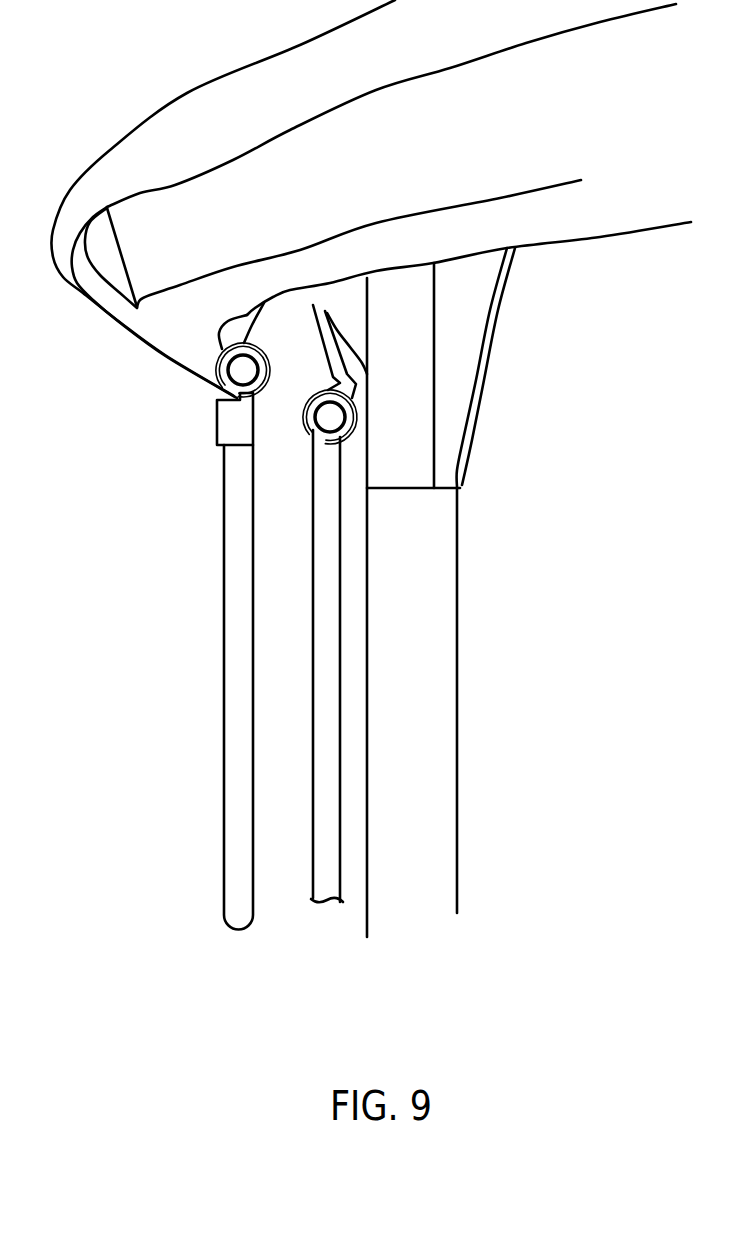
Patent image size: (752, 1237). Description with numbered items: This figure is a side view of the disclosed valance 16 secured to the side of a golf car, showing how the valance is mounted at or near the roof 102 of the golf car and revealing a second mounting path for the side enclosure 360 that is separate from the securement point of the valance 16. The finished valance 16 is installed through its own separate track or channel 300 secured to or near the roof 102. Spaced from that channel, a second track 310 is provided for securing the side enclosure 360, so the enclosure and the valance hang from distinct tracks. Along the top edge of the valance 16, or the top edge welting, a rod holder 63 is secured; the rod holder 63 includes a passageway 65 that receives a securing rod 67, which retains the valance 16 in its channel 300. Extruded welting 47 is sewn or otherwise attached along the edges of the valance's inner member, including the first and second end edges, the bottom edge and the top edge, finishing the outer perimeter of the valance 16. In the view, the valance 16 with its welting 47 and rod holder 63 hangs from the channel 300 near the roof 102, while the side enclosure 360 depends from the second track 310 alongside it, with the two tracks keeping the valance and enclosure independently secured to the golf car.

The roof 102 is at (362, 180).
The track or channel 300 is at (243, 318).
The second track 310 is at (360, 417).
The passageway 65 is at (245, 372).
The securing rod 67 is at (232, 372).
The rod holder 63 is at (223, 420).
The extruded welting 47 is at (230, 718).
The side enclosure 360 is at (328, 673).
The valance 16 is at (115, 555).